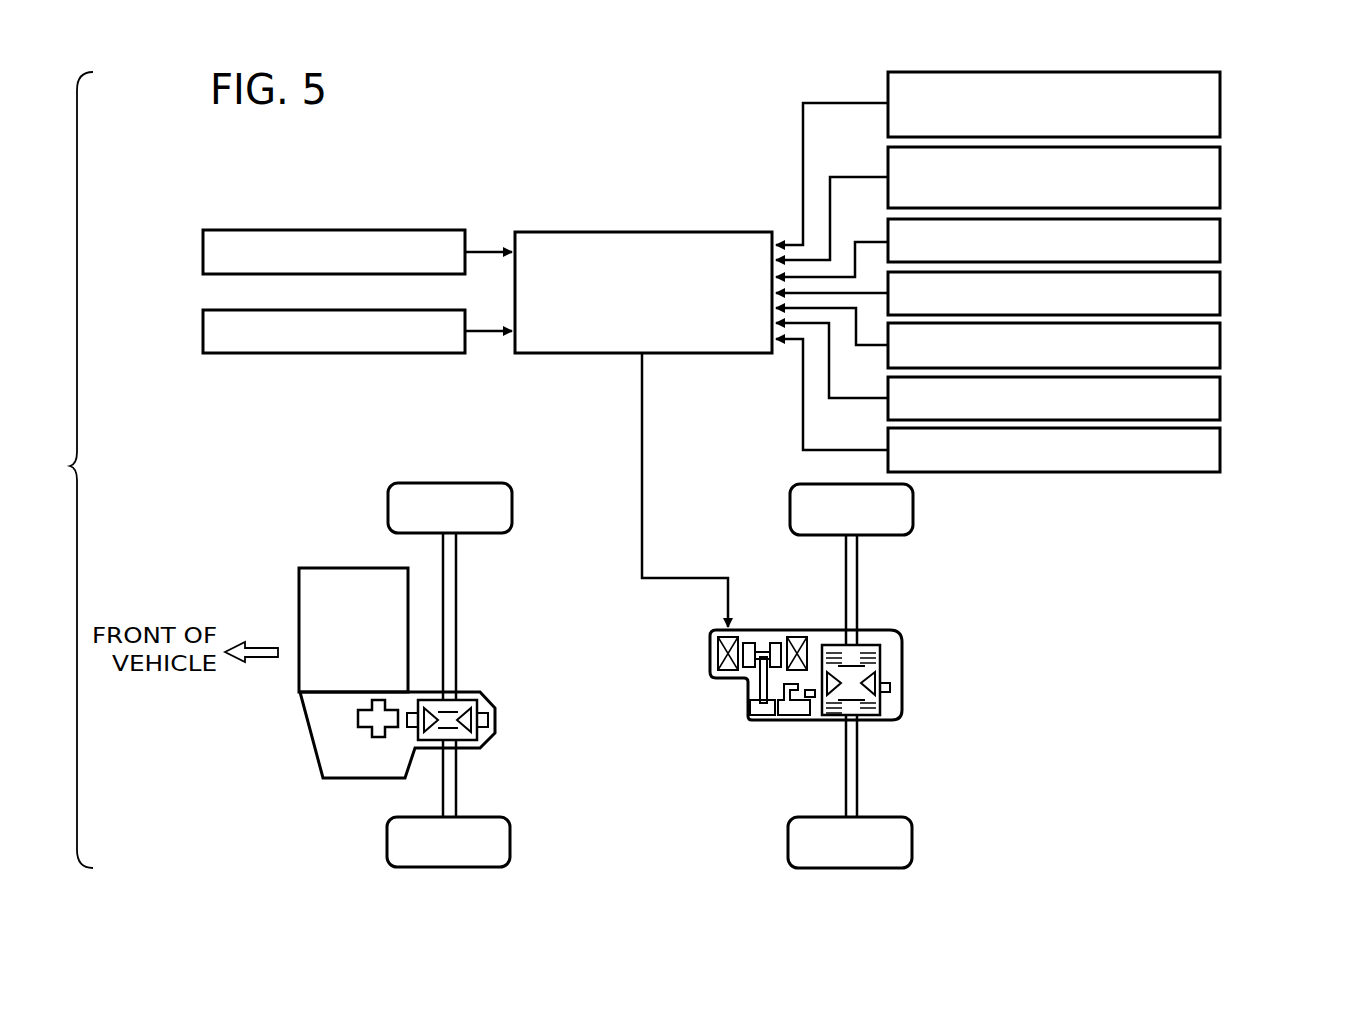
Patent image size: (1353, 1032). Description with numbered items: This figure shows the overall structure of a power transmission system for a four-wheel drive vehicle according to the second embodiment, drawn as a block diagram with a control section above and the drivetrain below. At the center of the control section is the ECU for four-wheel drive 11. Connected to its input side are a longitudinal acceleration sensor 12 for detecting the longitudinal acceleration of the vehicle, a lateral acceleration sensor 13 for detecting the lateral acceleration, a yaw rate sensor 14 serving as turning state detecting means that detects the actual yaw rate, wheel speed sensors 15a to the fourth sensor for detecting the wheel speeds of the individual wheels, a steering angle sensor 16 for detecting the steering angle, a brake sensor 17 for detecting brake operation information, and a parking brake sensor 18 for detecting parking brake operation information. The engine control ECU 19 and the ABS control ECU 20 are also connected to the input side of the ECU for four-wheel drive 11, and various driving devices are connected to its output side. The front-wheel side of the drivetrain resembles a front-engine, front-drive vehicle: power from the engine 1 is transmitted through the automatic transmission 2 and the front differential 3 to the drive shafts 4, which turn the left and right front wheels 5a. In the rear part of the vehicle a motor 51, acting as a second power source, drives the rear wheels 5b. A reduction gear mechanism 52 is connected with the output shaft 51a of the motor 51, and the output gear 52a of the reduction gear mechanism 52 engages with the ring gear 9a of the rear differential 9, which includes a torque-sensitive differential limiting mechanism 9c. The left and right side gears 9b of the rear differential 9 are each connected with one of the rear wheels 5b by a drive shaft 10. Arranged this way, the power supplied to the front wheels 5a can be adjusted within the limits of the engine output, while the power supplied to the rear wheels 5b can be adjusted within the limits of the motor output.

The engine 1 is at (321, 568).
The automatic transmission 2 is at (302, 714).
The front differential 3 is at (496, 738).
The drive shafts 4 is at (457, 620).
The front wheels 5a is at (508, 500).
The rear wheels 5b is at (798, 507).
The rear differential 9 is at (832, 683).
The ring gear 9a is at (897, 687).
The side gears 9b is at (858, 660).
The torque-sensitive differential limiting mechanism 9c is at (833, 715).
The drive shaft 10 is at (858, 559).
The ECU for four-wheel drive 11 is at (557, 232).
The longitudinal acceleration sensor 12 is at (1221, 92).
The lateral acceleration sensor 13 is at (1221, 187).
The yaw rate sensor 14 is at (1221, 239).
The wheel speed sensor 15a is at (1221, 291).
The steering angle sensor 16 is at (1221, 346).
The brake sensor 17 is at (1221, 399).
The parking brake sensor 18 is at (1221, 451).
The engine control ECU 19 is at (203, 251).
The ABS control ECU 20 is at (203, 331).
The motor 51 is at (718, 652).
The output shaft 51a is at (758, 686).
The reduction gear mechanism 52 is at (745, 711).
The output gear 52a is at (788, 692).